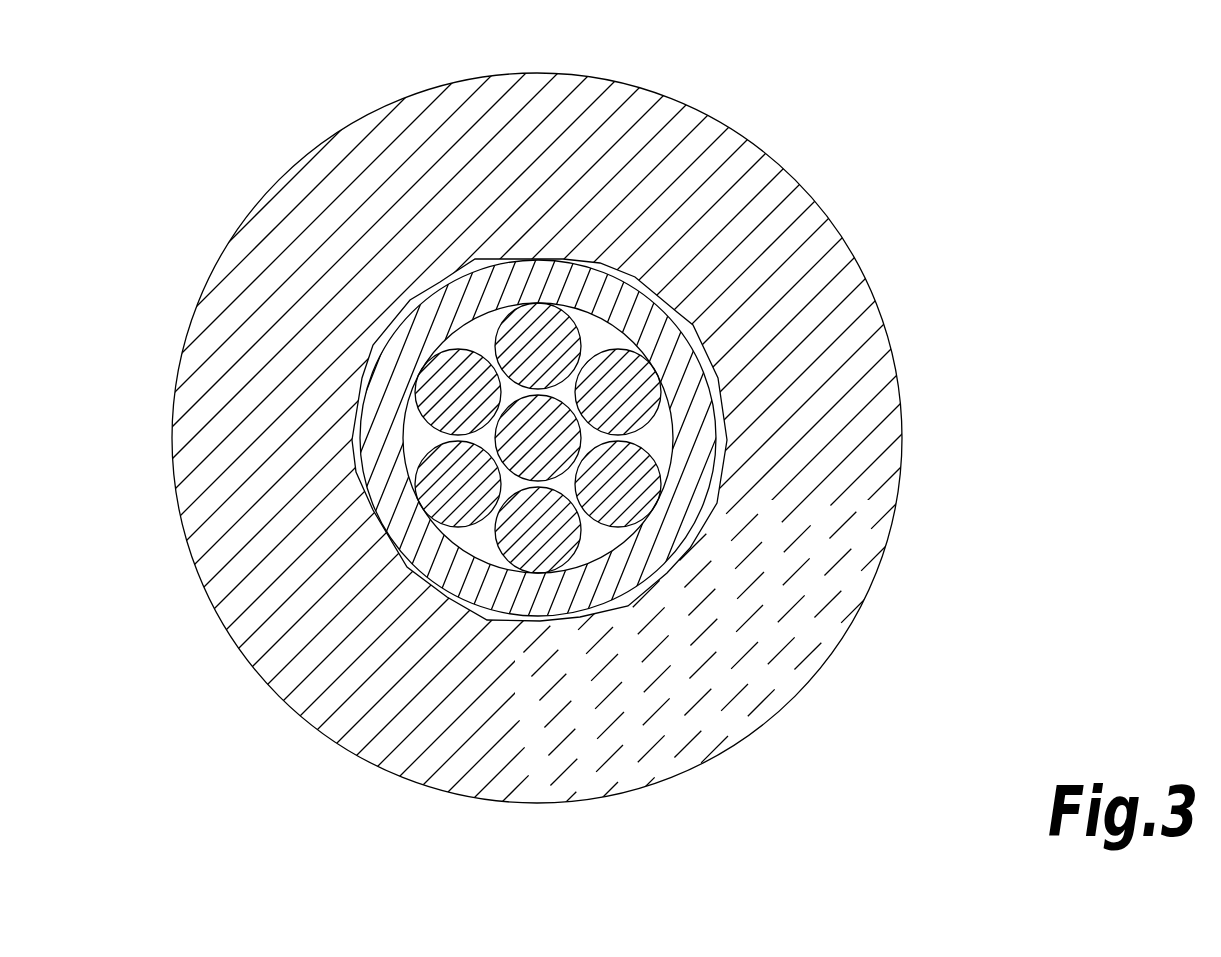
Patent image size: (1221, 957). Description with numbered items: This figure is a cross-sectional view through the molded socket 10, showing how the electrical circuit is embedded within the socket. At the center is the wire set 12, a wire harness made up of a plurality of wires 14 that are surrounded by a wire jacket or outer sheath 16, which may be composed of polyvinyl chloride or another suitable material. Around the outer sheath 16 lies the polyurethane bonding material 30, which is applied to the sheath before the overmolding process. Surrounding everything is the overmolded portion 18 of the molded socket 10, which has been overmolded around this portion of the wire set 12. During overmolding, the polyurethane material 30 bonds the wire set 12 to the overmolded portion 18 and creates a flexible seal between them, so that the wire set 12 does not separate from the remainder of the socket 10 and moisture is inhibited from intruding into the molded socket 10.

The molded socket 10 is at (1051, 172).
The wire set 12 is at (620, 607).
The wires 14 is at (507, 573).
The outer sheath 16 is at (673, 563).
The overmolded portion 18 is at (898, 380).
The polyurethane bonding material 30 is at (720, 505).